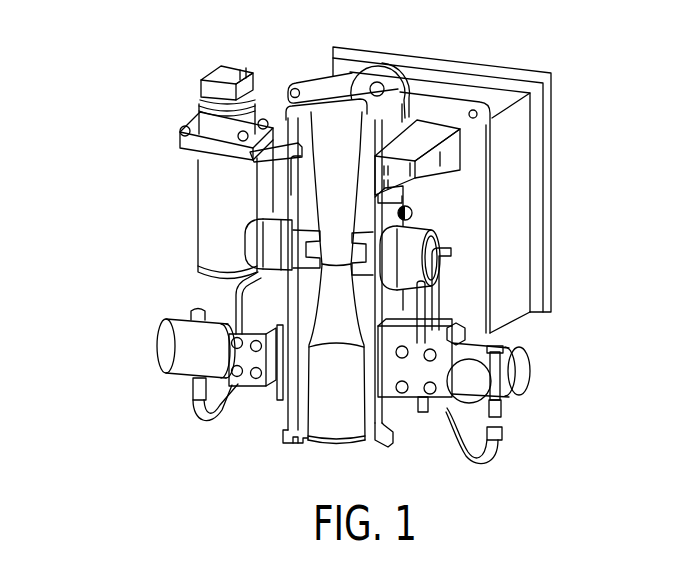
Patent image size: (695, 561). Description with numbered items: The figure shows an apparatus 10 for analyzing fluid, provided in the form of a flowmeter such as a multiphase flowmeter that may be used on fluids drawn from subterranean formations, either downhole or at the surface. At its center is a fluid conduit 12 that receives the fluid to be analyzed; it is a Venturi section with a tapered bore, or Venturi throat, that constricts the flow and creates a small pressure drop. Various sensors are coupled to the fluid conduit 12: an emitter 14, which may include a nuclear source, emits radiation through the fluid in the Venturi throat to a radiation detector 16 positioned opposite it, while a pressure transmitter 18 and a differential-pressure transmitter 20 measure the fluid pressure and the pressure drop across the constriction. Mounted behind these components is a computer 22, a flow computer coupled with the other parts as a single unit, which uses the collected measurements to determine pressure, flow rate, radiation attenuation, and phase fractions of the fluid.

The apparatus 10 is at (133, 92).
The fluid conduit 12 is at (298, 302).
The emitter 14 is at (390, 262).
The radiation detector 16 is at (221, 189).
The pressure transmitter 18 is at (181, 354).
The differential-pressure transmitter 20 is at (529, 363).
The computer 22 is at (555, 126).